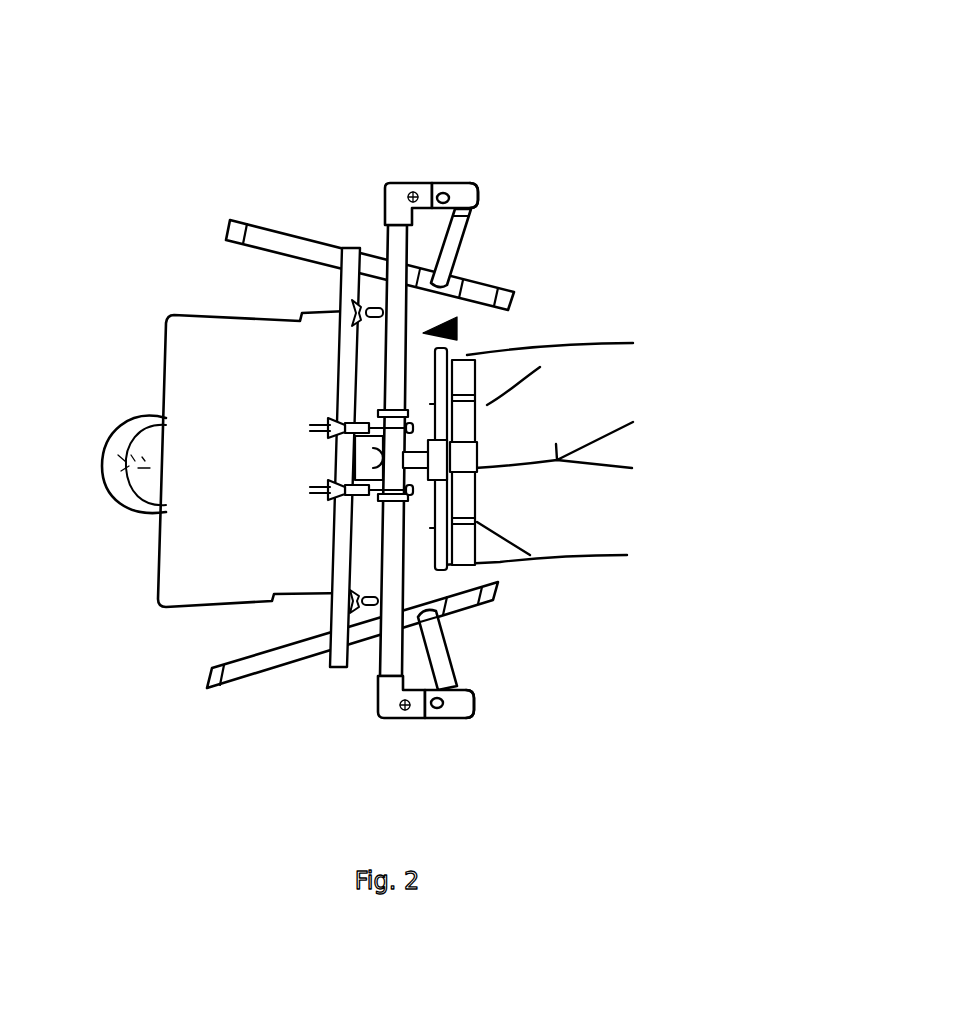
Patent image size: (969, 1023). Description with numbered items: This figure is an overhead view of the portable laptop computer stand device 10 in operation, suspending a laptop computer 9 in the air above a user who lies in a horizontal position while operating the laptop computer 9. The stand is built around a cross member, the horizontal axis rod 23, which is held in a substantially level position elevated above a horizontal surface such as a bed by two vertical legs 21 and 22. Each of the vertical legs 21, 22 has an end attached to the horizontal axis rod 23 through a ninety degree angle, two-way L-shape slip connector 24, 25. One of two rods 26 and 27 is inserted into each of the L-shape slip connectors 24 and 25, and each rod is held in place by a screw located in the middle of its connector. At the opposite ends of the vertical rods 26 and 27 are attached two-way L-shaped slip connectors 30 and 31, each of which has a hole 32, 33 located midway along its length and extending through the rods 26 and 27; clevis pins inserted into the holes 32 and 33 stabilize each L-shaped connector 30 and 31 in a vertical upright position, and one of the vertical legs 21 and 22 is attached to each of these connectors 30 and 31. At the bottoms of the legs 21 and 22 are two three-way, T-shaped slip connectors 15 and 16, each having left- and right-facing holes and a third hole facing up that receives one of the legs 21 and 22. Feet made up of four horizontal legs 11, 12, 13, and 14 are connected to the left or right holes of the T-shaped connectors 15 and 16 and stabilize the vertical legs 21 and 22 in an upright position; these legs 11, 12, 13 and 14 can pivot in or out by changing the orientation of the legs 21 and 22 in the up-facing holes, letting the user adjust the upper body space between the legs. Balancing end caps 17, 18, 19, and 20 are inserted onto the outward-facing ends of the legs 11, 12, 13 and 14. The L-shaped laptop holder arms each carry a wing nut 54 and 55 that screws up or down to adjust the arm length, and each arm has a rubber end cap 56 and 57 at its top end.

The laptop computer 9 is at (205, 336).
The portable laptop computer stand device 10 is at (470, 348).
The horizontal leg 11 is at (282, 233).
The horizontal leg 12 is at (257, 655).
The horizontal leg 13 is at (512, 294).
The horizontal leg 14 is at (467, 610).
The three-way T-shaped slip connector 15 is at (463, 278).
The three-way T-shaped slip connector 16 is at (443, 620).
The balancing end cap 17 is at (228, 228).
The balancing end cap 18 is at (457, 328).
The balancing end cap 19 is at (505, 598).
The balancing end cap 20 is at (203, 683).
The vertical leg 21 is at (450, 245).
The vertical leg 22 is at (437, 652).
The horizontal axis rod 23 is at (398, 548).
The 90 degree angle two-way L-shape slip connector 24 is at (384, 185).
The 90 degree angle two-way L-shape slip connector 25 is at (375, 707).
The vertical rod 26 is at (417, 717).
The vertical rod 27 is at (430, 183).
The two-way L-shaped slip connector 30 is at (462, 717).
The two-way L-shaped slip connector 31 is at (477, 188).
The hole 32 is at (438, 710).
The hole 33 is at (447, 193).
The wing nut 54 is at (343, 587).
The wing nut 55 is at (350, 330).
The rubber end cap 56 is at (365, 592).
The rubber end cap 57 is at (372, 307).